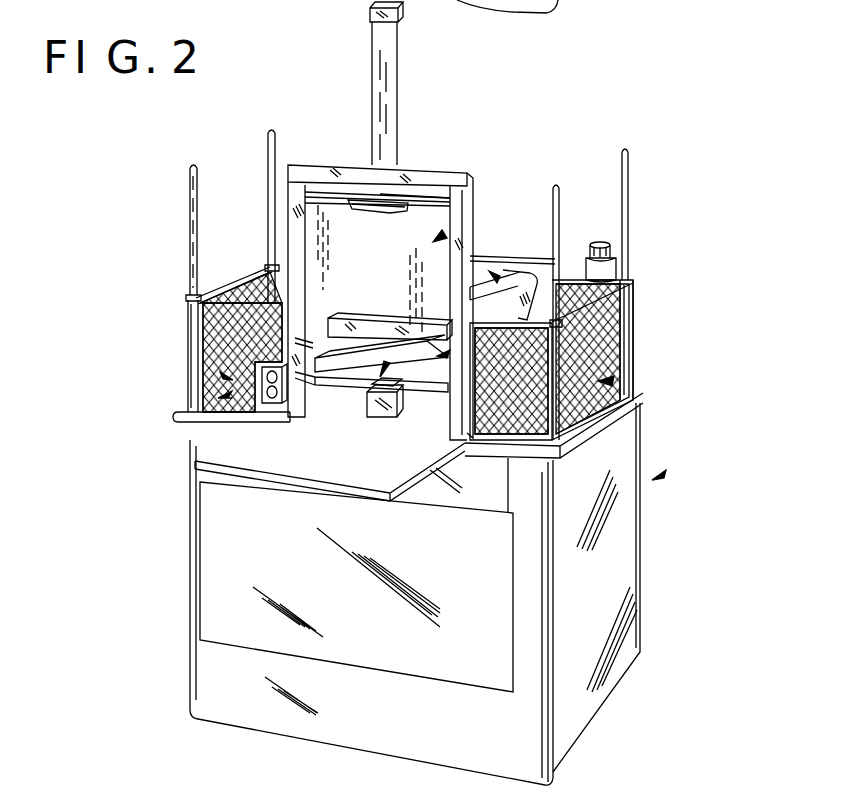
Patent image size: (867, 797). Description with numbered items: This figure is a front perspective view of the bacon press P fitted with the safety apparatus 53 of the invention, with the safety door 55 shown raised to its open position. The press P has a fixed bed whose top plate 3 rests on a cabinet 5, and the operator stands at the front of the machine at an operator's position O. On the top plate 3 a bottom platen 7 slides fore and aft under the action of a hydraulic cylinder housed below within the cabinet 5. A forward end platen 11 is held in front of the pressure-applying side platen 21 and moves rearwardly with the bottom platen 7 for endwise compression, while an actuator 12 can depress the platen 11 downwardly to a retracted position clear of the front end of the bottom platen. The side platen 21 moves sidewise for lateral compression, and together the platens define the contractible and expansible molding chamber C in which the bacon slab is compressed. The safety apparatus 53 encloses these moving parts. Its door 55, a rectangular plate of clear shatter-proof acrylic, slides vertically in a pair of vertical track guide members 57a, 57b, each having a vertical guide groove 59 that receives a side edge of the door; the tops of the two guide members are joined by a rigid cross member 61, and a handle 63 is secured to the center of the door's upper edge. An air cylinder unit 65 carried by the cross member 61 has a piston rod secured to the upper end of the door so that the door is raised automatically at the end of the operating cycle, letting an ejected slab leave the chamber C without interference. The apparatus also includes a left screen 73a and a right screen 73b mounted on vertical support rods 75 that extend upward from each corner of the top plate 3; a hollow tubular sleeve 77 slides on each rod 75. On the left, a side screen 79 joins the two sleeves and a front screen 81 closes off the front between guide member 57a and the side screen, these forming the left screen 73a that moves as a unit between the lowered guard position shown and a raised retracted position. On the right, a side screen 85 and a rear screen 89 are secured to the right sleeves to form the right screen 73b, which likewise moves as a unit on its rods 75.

The top plate 3 is at (643, 400).
The cabinet 5 is at (622, 643).
The bottom platen 7 is at (432, 375).
The forward end platen 11 is at (422, 398).
The actuator 12 is at (375, 388).
The pressure-applying side platen 21 is at (365, 382).
The safety apparatus 53 is at (205, 425).
The safety door 55 is at (436, 239).
The vertical track guide member 57a is at (286, 212).
The vertical track guide member 57b is at (440, 355).
The vertical guide groove 59 is at (193, 295).
The rigid cross member 61 is at (320, 167).
The handle 63 is at (362, 207).
The air cylinder unit 65 is at (397, 93).
The left screen 73a is at (225, 378).
The right screen 73b is at (600, 381).
The vertical support rods 75 is at (190, 192).
The tubular sleeve 77 is at (189, 368).
The side screen 79 is at (247, 290).
The front screen 81 is at (318, 335).
The side screen 85 is at (623, 317).
The rear screen 89 is at (630, 267).
The molding chamber C is at (477, 300).
The bacon press P is at (655, 479).
The operator's position O is at (353, 605).